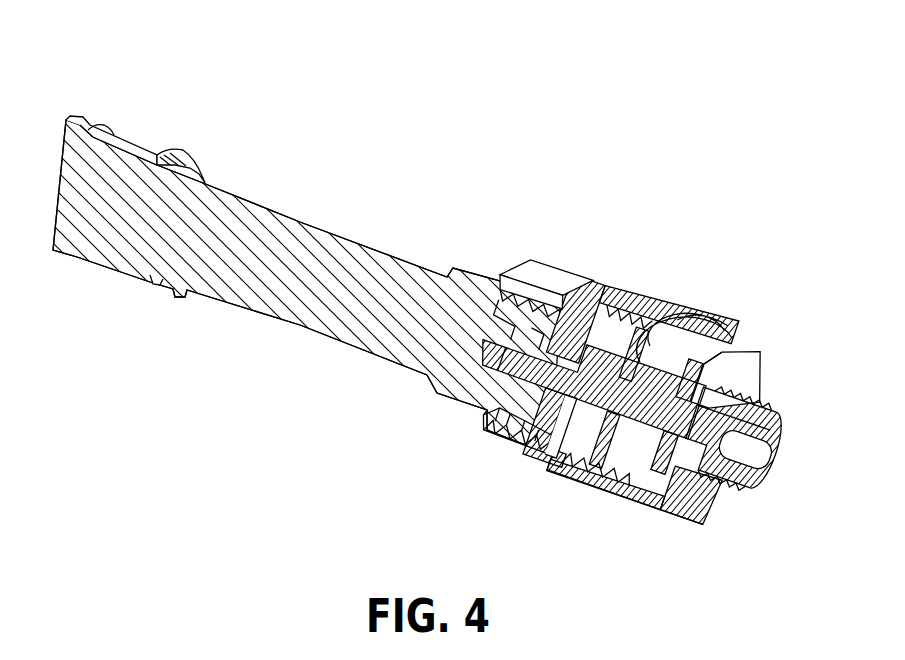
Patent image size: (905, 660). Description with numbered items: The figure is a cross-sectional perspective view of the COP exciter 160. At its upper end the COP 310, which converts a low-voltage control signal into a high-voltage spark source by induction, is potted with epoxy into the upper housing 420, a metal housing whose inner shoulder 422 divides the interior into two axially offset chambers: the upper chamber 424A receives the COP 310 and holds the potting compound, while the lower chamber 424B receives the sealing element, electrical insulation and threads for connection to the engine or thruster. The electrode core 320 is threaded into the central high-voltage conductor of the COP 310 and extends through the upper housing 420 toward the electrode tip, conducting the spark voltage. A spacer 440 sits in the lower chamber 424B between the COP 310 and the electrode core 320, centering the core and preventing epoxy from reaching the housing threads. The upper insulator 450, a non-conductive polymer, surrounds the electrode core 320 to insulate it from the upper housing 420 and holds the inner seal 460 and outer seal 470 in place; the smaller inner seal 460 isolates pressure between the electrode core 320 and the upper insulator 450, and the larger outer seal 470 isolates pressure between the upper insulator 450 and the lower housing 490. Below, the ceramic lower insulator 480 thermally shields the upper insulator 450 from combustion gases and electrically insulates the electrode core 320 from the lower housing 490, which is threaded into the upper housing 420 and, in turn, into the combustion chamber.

The COP exciter 160 is at (308, 34).
The COP 310 is at (129, 140).
The electrode core 320 is at (637, 367).
The upper housing 420 is at (535, 268).
The inner shoulder 422 is at (547, 475).
The upper chamber 424A is at (474, 450).
The lower chamber 424B is at (573, 498).
The spacer 440 is at (608, 378).
The upper insulator 450 is at (668, 345).
The inner seal 460 is at (710, 375).
The outer seal 470 is at (698, 352).
The lower insulator 480 is at (652, 374).
The lower housing 490 is at (769, 410).